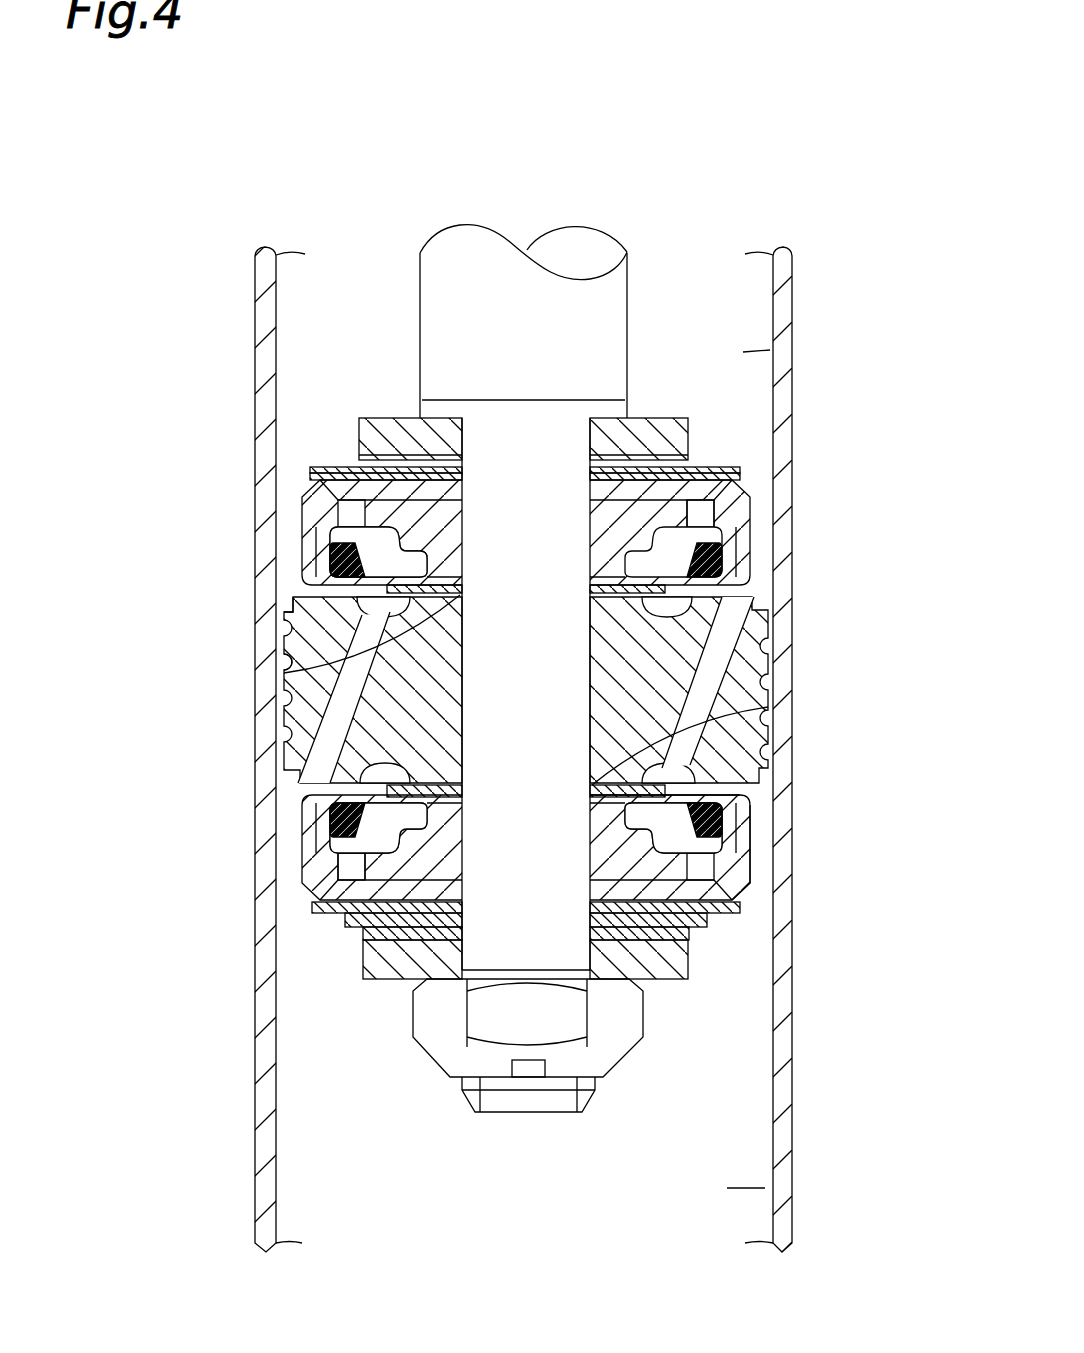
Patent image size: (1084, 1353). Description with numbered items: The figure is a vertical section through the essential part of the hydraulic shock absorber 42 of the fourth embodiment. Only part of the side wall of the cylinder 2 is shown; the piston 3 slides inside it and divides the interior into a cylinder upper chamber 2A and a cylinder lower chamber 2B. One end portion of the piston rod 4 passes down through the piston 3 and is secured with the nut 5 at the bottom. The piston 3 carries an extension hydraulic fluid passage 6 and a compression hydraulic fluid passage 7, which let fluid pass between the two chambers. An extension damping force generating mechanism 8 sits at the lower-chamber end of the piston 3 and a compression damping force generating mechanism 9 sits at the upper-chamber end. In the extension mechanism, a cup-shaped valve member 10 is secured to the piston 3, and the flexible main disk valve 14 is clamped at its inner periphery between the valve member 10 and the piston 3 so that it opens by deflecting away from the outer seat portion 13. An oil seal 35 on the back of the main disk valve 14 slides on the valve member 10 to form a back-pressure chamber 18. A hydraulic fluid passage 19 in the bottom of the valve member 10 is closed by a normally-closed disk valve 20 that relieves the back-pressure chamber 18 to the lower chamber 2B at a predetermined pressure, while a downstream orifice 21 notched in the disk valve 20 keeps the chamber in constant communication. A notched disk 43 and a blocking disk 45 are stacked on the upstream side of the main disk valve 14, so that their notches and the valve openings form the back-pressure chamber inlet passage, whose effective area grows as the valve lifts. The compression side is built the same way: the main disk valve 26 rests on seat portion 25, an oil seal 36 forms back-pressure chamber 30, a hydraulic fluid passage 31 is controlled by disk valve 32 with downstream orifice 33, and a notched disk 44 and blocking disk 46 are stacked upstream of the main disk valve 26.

The cylinder 2 is at (783, 304).
The cylinder upper chamber 2A is at (770, 350).
The cylinder lower chamber 2B is at (765, 1188).
The piston 3 is at (524, 688).
The piston rod 4 is at (490, 267).
The nut 5 is at (452, 1063).
The extension hydraulic fluid passage 6 is at (730, 622).
The compression hydraulic fluid passage 7 is at (320, 750).
The extension damping force generating mechanism 8 is at (762, 880).
The compression damping force generating mechanism 9 is at (284, 498).
The valve member 10 is at (322, 836).
The seat portion 13 is at (755, 808).
The main disk valve 14 is at (750, 797).
The back-pressure chamber 18 is at (703, 849).
The hydraulic fluid passage 19 is at (343, 879).
The disk valve 20 is at (330, 907).
The downstream orifice 21 is at (323, 906).
The seat portion 25 is at (310, 597).
The main disk valve 26 is at (327, 593).
The back-pressure chamber 30 is at (327, 530).
The hydraulic fluid passage 31 is at (695, 505).
The disk valve 32 is at (740, 472).
The downstream orifice 33 is at (737, 481).
The oil seal 35 is at (717, 823).
The oil seal 36 is at (337, 548).
The hydraulic shock absorber 42 is at (828, 137).
The notched disk 43 is at (677, 787).
The notched disk 44 is at (347, 667).
The blocking disk 45 is at (730, 782).
The blocking disk 46 is at (288, 650).